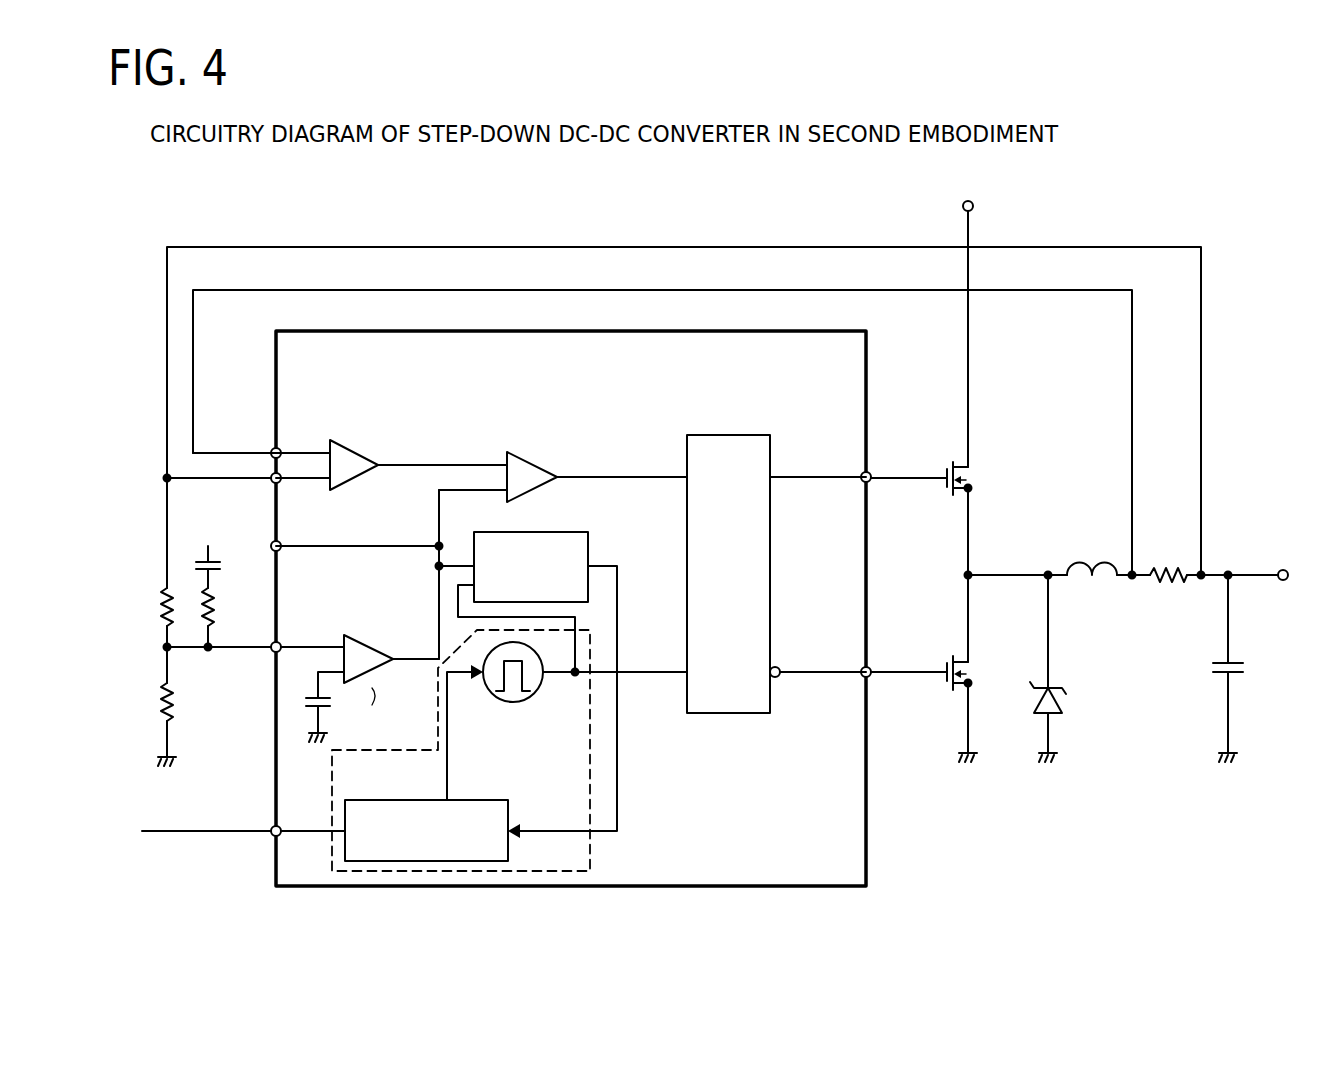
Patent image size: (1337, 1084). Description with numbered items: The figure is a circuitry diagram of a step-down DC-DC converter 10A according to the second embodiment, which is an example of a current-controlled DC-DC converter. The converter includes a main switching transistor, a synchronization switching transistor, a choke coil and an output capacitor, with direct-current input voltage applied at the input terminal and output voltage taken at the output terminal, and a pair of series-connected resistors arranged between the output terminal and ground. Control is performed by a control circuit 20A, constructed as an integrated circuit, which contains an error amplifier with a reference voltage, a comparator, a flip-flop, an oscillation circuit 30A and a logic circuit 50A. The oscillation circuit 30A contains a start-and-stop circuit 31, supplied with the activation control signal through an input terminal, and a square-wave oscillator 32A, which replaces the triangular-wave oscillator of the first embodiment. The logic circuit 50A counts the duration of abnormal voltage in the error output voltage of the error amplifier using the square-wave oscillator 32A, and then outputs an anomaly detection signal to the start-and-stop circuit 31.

The step-down DC-DC converter 10A is at (1199, 232).
The control circuit 20A is at (700, 887).
The oscillation circuit 30A is at (522, 871).
The start-and-stop circuit 31 is at (442, 861).
The square-wave oscillator 32A is at (540, 688).
The logic circuit 50A is at (565, 532).